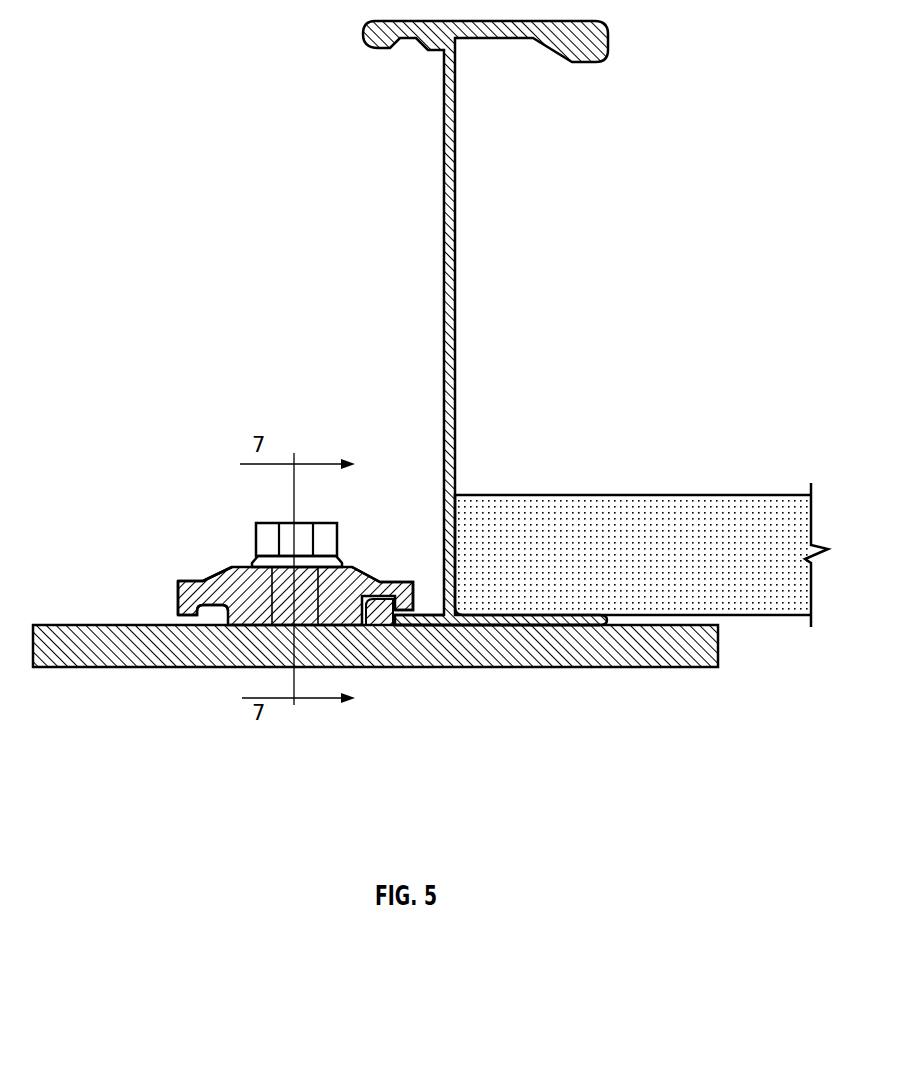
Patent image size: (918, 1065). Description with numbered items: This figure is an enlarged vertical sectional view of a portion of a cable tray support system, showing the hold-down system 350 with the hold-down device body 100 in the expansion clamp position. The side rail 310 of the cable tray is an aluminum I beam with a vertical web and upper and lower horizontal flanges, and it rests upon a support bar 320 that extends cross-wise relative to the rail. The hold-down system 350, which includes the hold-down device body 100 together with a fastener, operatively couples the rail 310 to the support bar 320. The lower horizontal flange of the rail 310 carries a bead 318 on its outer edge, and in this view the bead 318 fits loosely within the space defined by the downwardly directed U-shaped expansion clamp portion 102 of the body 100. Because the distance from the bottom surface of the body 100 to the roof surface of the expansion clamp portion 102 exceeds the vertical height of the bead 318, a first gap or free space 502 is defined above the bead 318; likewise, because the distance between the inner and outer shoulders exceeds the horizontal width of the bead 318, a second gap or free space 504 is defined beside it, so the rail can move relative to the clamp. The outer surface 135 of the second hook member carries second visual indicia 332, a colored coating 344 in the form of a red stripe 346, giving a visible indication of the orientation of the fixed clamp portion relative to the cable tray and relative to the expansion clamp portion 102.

The hold-down device body 100 is at (217, 575).
The expansion clamp portion 102 is at (390, 550).
The outer surface of the second hook member 135 is at (188, 617).
The side rail 310 is at (470, 244).
The bead 318 is at (364, 598).
The support bar 320 is at (153, 650).
The second visual indicia 332 is at (167, 579).
The colored coating 344 is at (178, 597).
The red stripe 346 is at (178, 607).
The hold-down system 350 is at (352, 508).
The first gap or free space 502 is at (462, 507).
The second gap or free space 504 is at (396, 612).